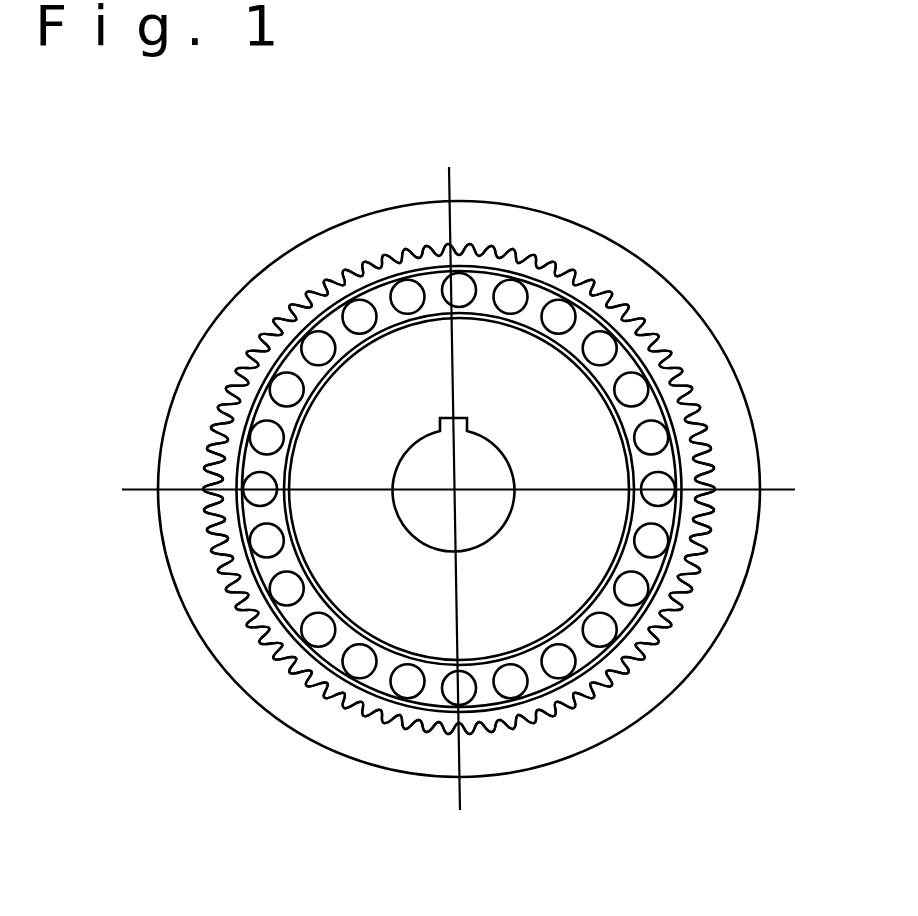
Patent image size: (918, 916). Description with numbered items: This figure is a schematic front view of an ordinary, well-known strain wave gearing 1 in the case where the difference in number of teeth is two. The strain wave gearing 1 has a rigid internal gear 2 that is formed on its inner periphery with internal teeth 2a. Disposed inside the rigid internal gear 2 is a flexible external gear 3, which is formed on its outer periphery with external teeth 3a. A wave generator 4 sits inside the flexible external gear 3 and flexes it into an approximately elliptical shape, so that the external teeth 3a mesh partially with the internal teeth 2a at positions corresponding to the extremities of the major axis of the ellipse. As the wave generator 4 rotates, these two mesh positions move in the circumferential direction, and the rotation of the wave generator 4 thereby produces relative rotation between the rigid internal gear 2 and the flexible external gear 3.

The strain wave gearing 1 is at (567, 197).
The rigid internal gear 2 is at (298, 258).
The internal teeth 2a is at (268, 323).
The flexible external gear 3 is at (647, 330).
The external teeth 3a is at (673, 360).
The wave generator 4 is at (328, 434).